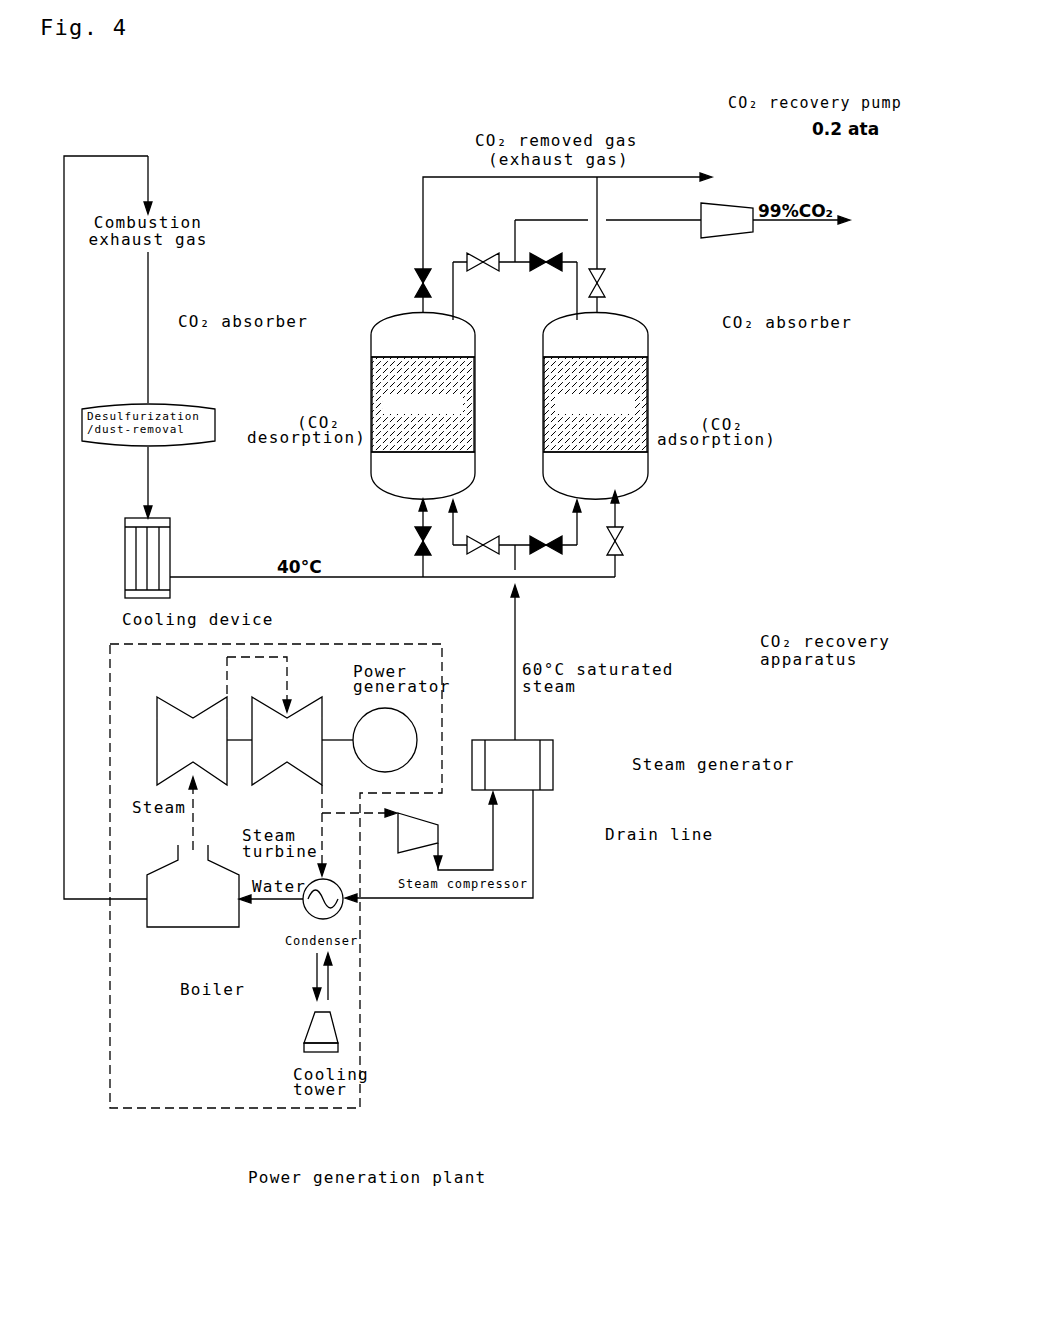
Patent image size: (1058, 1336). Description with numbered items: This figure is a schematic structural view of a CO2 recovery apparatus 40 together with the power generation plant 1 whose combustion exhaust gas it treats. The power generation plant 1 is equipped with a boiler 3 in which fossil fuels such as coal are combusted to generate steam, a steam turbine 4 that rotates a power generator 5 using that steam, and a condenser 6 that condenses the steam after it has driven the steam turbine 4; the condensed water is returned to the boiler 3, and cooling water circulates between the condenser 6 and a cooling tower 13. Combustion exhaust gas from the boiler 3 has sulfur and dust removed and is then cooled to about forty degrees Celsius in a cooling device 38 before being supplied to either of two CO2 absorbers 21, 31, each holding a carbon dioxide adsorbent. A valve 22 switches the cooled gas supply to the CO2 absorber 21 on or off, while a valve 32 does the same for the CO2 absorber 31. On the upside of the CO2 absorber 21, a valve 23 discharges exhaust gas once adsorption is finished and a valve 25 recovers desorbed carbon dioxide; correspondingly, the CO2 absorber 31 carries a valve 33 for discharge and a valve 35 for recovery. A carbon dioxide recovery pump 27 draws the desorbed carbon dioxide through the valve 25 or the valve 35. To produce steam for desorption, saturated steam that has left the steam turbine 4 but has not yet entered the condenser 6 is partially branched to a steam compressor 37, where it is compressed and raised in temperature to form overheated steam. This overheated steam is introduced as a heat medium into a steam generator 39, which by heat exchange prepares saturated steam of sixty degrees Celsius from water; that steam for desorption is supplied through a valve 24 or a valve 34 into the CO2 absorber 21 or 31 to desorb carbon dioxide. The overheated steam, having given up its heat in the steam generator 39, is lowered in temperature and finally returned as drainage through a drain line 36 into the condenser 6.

The power generation plant 1 is at (240, 1108).
The boiler 3 is at (172, 927).
The steam turbine 4 is at (212, 785).
The power generator 5 is at (363, 714).
The condenser 6 is at (305, 913).
The cooling tower 13 is at (304, 1035).
The CO2 absorber 21 is at (650, 336).
The valve 22 is at (622, 535).
The valve 23 is at (605, 283).
The valve 24 is at (540, 537).
The valve 25 is at (546, 272).
The carbon dioxide recovery pump 27 is at (728, 203).
The CO2 absorber 31 is at (371, 340).
The valve 32 is at (412, 546).
The valve 33 is at (415, 283).
The valve 34 is at (483, 535).
The valve 35 is at (480, 272).
The drain line 36 is at (533, 830).
The steam compressor 37 is at (398, 843).
The cooling device 38 is at (125, 560).
The steam generator 39 is at (553, 765).
The CO2 recovery apparatus 40 is at (661, 579).